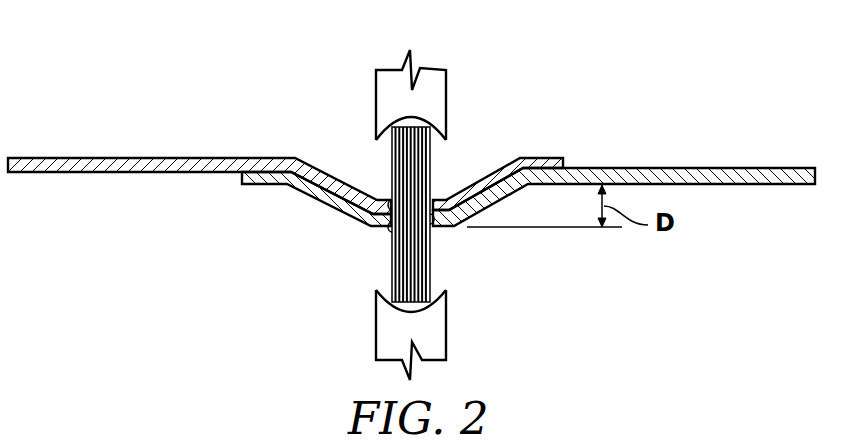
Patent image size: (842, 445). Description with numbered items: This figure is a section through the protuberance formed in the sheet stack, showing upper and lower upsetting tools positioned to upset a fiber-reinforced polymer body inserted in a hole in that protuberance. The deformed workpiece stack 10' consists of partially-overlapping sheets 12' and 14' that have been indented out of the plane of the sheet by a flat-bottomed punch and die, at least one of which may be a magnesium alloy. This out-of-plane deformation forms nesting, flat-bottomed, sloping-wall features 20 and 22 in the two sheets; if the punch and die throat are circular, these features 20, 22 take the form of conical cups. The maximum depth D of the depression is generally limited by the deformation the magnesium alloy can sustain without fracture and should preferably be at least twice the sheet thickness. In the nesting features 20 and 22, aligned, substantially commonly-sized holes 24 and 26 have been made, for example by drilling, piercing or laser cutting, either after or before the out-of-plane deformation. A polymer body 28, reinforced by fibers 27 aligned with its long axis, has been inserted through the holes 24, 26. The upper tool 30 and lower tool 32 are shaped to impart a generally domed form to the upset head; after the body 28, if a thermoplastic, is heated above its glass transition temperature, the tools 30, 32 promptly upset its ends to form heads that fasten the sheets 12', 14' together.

The deformed workpiece stack 10' is at (199, 260).
The deformed sheet 12' is at (199, 220).
The deformed sheet 14' is at (293, 242).
The flat-bottomed sloping-wall feature 20 is at (488, 207).
The flat-bottomed sloping-wall feature 22 is at (478, 178).
The hole 24 is at (393, 197).
The hole 26 is at (396, 230).
The fibers 27 is at (413, 252).
The polymer body 28 is at (432, 224).
The upper tool 30 is at (440, 97).
The lower tool 32 is at (435, 347).